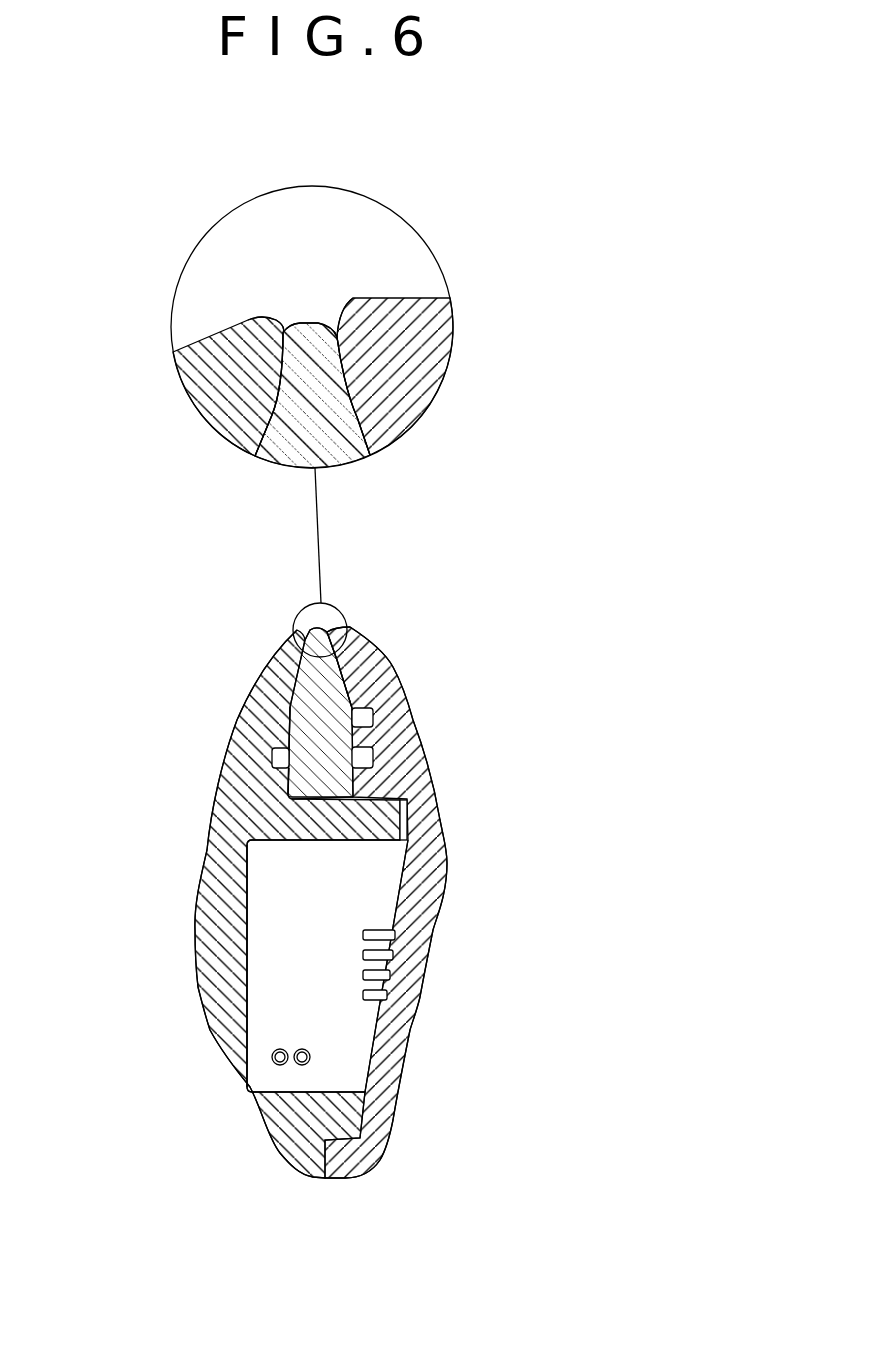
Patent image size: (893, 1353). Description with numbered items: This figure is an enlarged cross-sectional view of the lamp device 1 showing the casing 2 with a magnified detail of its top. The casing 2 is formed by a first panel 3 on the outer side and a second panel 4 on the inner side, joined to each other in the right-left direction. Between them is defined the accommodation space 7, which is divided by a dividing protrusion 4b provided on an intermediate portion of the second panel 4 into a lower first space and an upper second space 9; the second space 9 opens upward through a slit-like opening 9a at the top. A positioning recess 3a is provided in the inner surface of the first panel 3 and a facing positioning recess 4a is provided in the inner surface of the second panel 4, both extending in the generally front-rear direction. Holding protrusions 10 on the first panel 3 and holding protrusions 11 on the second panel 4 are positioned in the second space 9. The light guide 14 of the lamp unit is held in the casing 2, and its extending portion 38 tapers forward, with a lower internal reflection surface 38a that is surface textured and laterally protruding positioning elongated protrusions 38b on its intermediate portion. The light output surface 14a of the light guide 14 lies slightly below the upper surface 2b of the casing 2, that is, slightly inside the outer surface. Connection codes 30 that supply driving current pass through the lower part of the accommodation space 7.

The device 1 is at (126, 631).
The casing 2 is at (211, 1051).
The upper surface of the casing 2b is at (350, 297).
The first panel 3 is at (443, 368).
The positioning recess 3a is at (373, 717).
The second panel 4 is at (207, 408).
The positioning recess 4a is at (283, 774).
The dividing protrusion 4b is at (400, 827).
The accommodation space 7 is at (325, 975).
The second space 9 is at (280, 422).
The opening 9a is at (297, 323).
The holding protrusions 10 is at (250, 951).
The holding protrusions 11 is at (287, 727).
The light guide 14 is at (353, 458).
The light output surface 14a is at (313, 323).
The connection codes 30 is at (278, 1065).
The extending portion 38 is at (355, 413).
The internal reflection surface 38a is at (307, 798).
The positioning elongated protrusions 38b is at (272, 757).